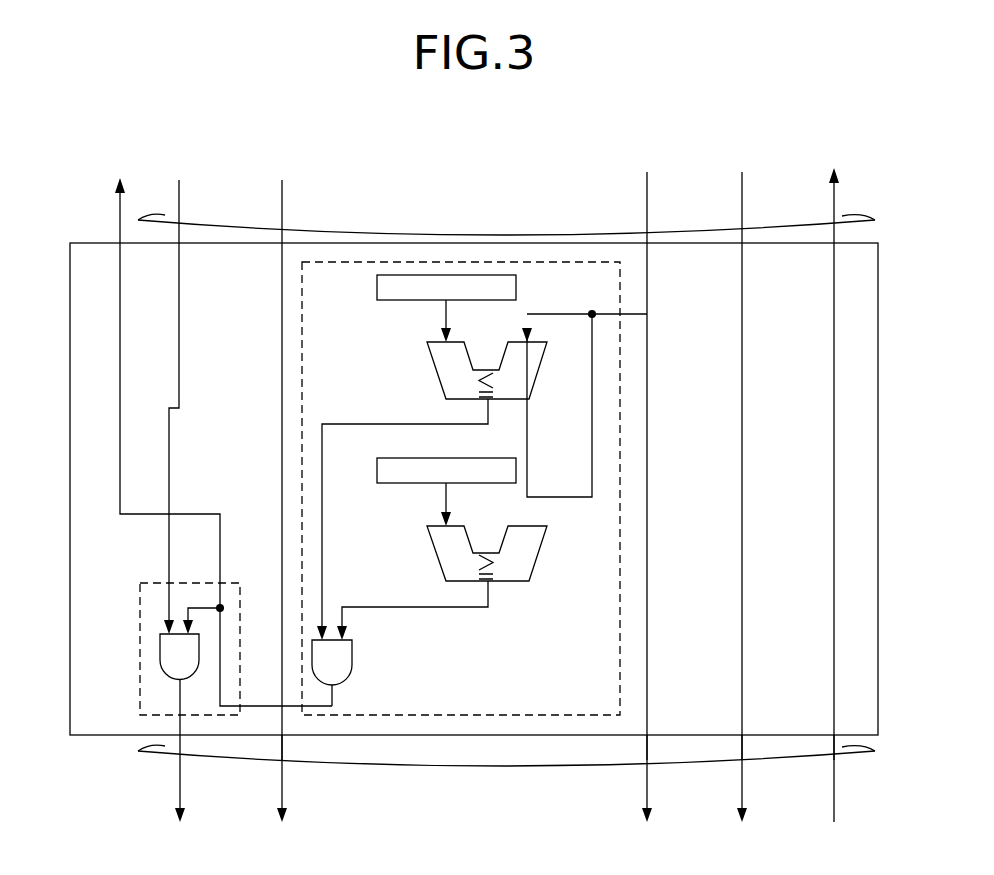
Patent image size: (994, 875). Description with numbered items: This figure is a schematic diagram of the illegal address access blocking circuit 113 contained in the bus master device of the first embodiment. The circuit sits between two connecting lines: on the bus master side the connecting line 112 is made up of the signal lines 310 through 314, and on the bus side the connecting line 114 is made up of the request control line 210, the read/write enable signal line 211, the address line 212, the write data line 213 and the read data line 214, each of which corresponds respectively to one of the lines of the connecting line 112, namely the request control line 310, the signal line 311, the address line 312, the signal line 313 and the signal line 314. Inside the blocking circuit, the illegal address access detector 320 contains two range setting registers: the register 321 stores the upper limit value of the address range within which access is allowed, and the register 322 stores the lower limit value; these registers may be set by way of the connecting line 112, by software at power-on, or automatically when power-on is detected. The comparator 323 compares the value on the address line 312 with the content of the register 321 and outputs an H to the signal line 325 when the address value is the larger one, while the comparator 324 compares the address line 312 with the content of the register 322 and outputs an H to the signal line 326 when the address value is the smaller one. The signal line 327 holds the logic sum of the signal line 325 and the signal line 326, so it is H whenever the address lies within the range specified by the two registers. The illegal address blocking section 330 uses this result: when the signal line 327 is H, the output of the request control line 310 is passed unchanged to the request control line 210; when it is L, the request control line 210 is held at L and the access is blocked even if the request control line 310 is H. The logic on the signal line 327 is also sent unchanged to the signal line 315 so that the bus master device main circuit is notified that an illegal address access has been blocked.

The connecting line 112 is at (505, 236).
The illegal address access blocking circuit 113 is at (417, 243).
The connecting line 114 is at (450, 766).
The request control line 210 is at (180, 783).
The read/write enable signal line 211 is at (282, 783).
The address line 212 is at (647, 783).
The write data line 213 is at (742, 783).
The read data line 214 is at (834, 783).
The request control line 310 is at (180, 206).
The signal line 311 is at (282, 206).
The address line 312 is at (647, 200).
The signal line 313 is at (742, 200).
The signal line 314 is at (834, 222).
The signal line 315 is at (118, 217).
The illegal address access detector 320 is at (620, 285).
The register 321 is at (377, 290).
The register 322 is at (377, 470).
The comparator 323 is at (433, 377).
The comparator 324 is at (433, 558).
The signal line 325 is at (488, 412).
The signal line 326 is at (488, 593).
The signal line 327 is at (334, 690).
The illegal address blocking section 330 is at (140, 650).